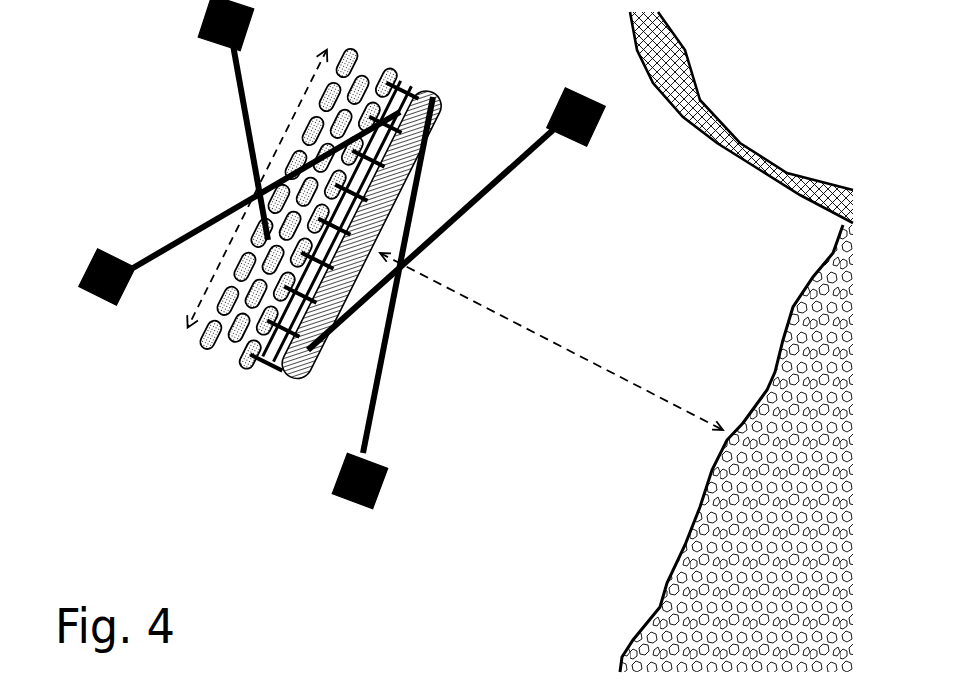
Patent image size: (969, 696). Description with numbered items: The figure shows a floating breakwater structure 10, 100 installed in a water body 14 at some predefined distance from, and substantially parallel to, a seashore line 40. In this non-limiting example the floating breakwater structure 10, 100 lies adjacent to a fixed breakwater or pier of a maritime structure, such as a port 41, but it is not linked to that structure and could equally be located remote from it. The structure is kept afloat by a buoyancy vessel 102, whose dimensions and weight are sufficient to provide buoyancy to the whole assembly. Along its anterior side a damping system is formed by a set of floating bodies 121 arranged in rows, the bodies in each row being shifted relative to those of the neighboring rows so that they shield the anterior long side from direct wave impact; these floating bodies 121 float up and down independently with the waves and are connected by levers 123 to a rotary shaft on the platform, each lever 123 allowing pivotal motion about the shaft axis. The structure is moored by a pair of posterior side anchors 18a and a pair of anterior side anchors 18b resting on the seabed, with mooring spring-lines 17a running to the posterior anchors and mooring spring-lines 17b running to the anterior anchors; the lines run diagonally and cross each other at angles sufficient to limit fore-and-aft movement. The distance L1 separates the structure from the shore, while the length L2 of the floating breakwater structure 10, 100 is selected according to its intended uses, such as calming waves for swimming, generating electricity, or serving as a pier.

The floating breakwater structure 10 is at (326, 250).
The floating breakwater structure 100 is at (418, 52).
The water body 14 is at (535, 213).
The mooring spring-lines 17a is at (413, 213).
The mooring spring-lines 17b is at (238, 128).
The posterior side anchors 18a is at (575, 91).
The anterior side anchors 18b is at (213, 40).
The seashore line 40 is at (772, 533).
The port 41 is at (754, 93).
The buoyancy vessel 102 is at (361, 235).
The floating bodies 121 is at (315, 208).
The levers 123 is at (239, 327).
The distance L1 is at (551, 341).
The length of the floating breakwater structure L2 is at (257, 188).